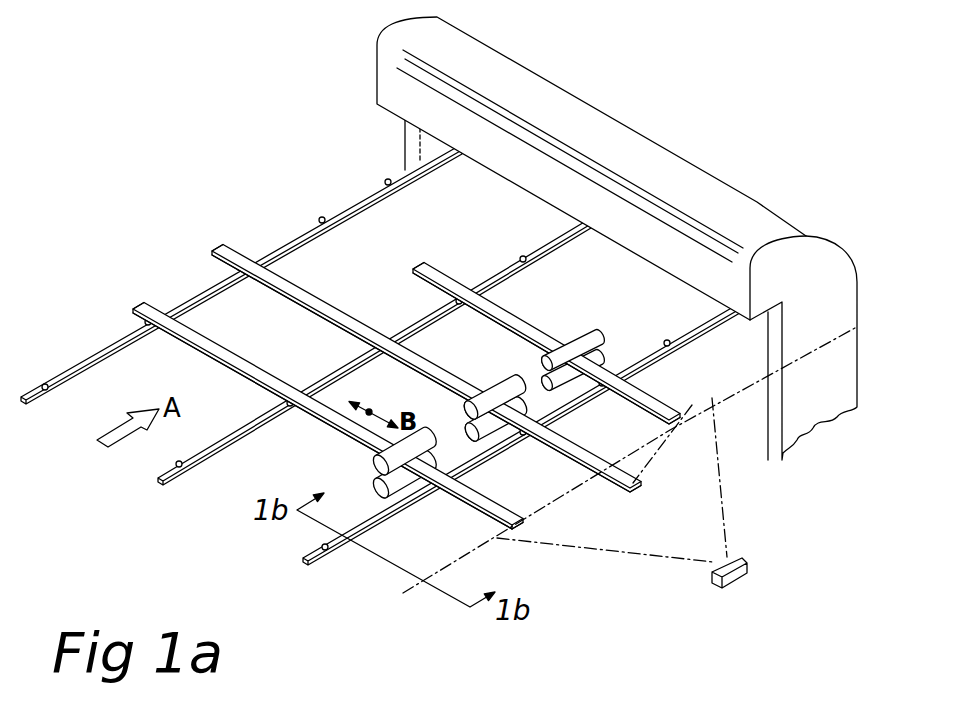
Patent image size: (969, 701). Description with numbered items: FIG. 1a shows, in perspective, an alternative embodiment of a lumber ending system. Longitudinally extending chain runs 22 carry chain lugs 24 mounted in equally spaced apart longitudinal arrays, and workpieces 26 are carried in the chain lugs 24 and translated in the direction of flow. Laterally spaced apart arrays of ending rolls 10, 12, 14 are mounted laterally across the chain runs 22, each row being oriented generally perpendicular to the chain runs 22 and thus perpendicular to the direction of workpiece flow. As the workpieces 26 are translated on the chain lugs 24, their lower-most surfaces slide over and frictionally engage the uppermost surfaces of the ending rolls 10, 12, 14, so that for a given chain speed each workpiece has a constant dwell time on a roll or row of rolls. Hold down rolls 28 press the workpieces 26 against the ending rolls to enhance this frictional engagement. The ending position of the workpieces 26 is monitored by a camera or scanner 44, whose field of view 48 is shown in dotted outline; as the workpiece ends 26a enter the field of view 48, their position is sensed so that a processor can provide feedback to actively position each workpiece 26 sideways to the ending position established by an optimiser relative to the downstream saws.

The ending rolls 10 is at (373, 496).
The ending rolls 12 is at (462, 433).
The ending rolls 14 is at (599, 338).
The chain runs 22 is at (358, 200).
The chain lugs 24 is at (236, 268).
The workpieces 26 is at (241, 256).
The workpiece ends 26a is at (524, 518).
The hold down rolls 28 is at (507, 380).
The camera or scanner 44 is at (744, 575).
The field of view 48 is at (712, 398).